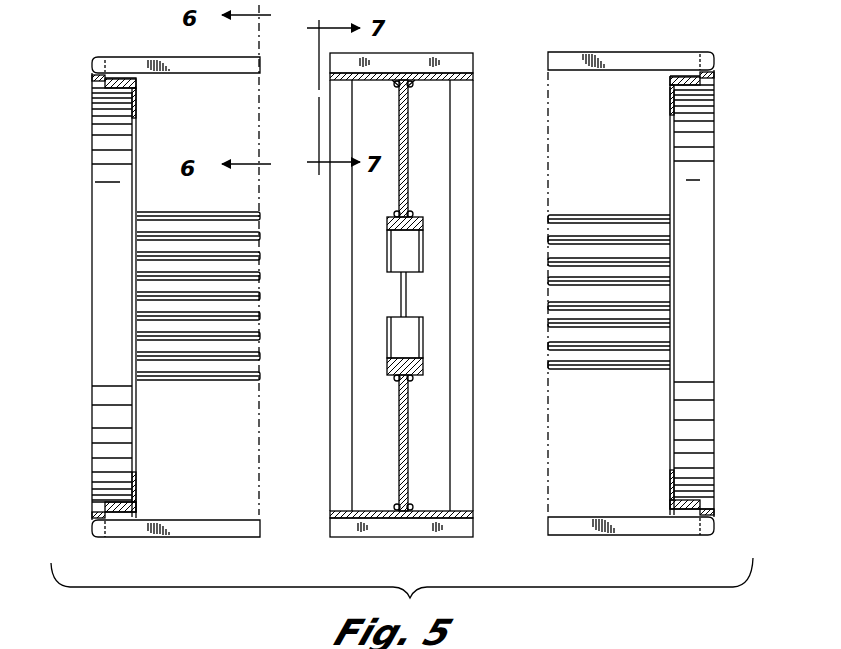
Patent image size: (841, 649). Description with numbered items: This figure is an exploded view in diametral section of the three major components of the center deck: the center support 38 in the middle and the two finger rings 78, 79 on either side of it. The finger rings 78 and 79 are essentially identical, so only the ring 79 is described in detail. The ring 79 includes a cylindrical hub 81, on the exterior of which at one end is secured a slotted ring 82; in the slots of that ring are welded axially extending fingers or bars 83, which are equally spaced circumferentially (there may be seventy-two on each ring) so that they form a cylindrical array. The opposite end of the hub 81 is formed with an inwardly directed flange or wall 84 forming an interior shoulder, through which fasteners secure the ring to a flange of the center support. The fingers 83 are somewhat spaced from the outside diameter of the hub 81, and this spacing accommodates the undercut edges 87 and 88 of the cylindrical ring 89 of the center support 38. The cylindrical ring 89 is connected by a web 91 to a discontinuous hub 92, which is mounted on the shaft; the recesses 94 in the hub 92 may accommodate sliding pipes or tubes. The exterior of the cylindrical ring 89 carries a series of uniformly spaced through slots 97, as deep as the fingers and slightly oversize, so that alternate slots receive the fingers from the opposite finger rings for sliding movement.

The center support 38 is at (409, 275).
The finger ring 78 is at (718, 258).
The finger ring 79 is at (142, 277).
The cylindrical hub 81 is at (95, 110).
The ring 82 is at (92, 78).
The fingers or bars 83 is at (143, 57).
The inwardly directed flange or wall 84 is at (136, 118).
The undercut edge 87 is at (338, 200).
The undercut edge 88 is at (468, 103).
The cylindrical ring 89 is at (432, 80).
The web 91 is at (409, 154).
The discontinuous hub 92 is at (423, 224).
The recesses 94 is at (398, 297).
The through slots 97 is at (414, 65).